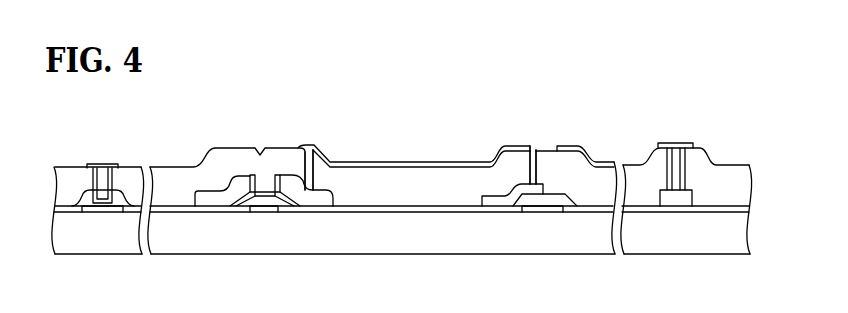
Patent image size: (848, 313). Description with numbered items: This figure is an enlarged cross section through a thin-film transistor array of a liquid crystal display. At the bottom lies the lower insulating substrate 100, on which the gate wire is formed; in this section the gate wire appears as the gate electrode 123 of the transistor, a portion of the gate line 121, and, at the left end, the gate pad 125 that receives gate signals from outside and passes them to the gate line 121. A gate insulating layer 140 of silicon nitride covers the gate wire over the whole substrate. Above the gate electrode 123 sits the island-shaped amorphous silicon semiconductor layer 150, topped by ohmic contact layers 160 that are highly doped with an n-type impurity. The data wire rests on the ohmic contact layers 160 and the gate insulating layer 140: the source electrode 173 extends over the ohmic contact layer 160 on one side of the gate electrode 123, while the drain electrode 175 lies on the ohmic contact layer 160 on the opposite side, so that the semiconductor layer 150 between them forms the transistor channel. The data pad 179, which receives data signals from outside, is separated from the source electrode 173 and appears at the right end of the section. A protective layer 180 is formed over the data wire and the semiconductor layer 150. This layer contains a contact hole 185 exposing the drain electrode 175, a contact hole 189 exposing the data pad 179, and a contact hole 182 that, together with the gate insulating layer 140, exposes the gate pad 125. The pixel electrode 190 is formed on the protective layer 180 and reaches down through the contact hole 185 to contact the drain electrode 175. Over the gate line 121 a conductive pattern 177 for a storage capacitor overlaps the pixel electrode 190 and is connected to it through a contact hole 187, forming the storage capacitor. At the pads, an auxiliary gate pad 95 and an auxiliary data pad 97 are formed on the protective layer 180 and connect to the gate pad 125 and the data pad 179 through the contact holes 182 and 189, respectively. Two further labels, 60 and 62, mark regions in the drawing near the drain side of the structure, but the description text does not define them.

The passivation region 60 is at (597, 200).
The opening 62 is at (293, 177).
The auxiliary gate pad 95 is at (89, 163).
The auxiliary data pad 97 is at (662, 143).
The lower insulating substrate 100 is at (352, 241).
The gate line 121 is at (553, 209).
The gate electrode 123 is at (268, 213).
The gate pad 125 is at (107, 213).
The gate insulating layer 140 is at (417, 209).
The semiconductor layer 150 is at (246, 207).
The ohmic contact layers 160 is at (252, 172).
The source electrode 173 is at (207, 204).
The drain electrode 175 is at (310, 204).
The conductive pattern for storage capacitor 177 is at (496, 198).
The data pad 179 is at (669, 203).
The protective layer 180 is at (445, 180).
The contact hole 182 is at (101, 163).
The contact hole 185 is at (319, 149).
The contact hole 187 is at (533, 145).
The contact hole 189 is at (677, 149).
The pixel electrode 190 is at (392, 161).